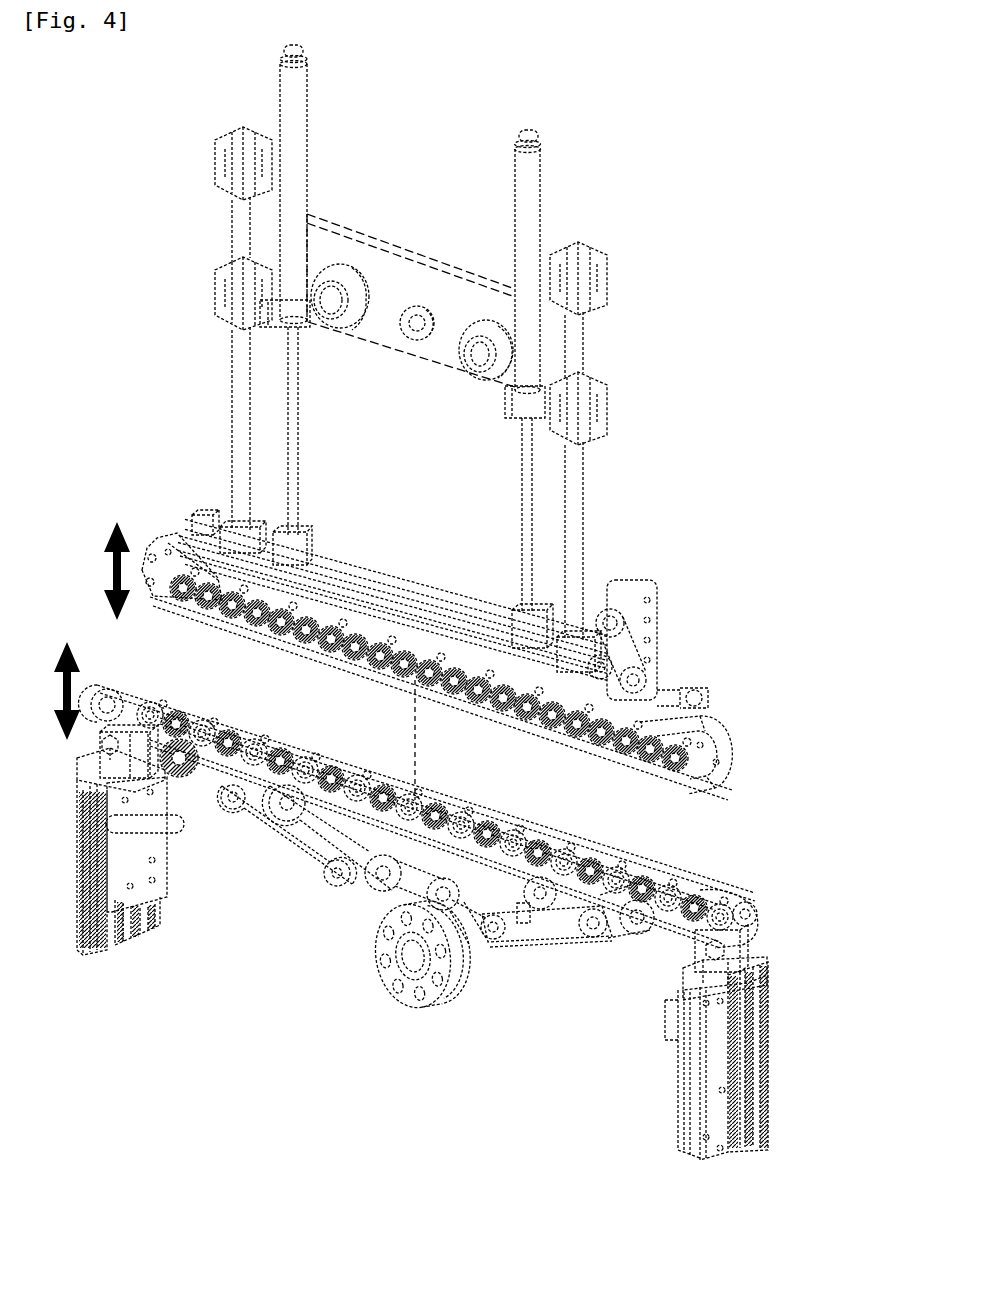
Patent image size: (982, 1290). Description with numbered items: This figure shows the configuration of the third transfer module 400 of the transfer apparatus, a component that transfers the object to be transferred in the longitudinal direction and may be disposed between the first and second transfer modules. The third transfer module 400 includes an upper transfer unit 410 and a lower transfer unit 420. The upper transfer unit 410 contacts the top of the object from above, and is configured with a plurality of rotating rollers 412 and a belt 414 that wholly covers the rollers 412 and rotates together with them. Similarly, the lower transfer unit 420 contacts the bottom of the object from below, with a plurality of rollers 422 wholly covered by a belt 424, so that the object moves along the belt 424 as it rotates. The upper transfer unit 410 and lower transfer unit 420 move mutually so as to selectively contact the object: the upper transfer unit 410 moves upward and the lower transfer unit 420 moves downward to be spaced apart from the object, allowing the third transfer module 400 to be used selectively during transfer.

The third transfer module 400 is at (756, 669).
The upper transfer unit 410 is at (831, 750).
The rollers 412 is at (688, 752).
The belt 414 is at (682, 780).
The lower transfer unit 420 is at (831, 853).
The rollers 422 is at (700, 897).
The belt 424 is at (686, 880).